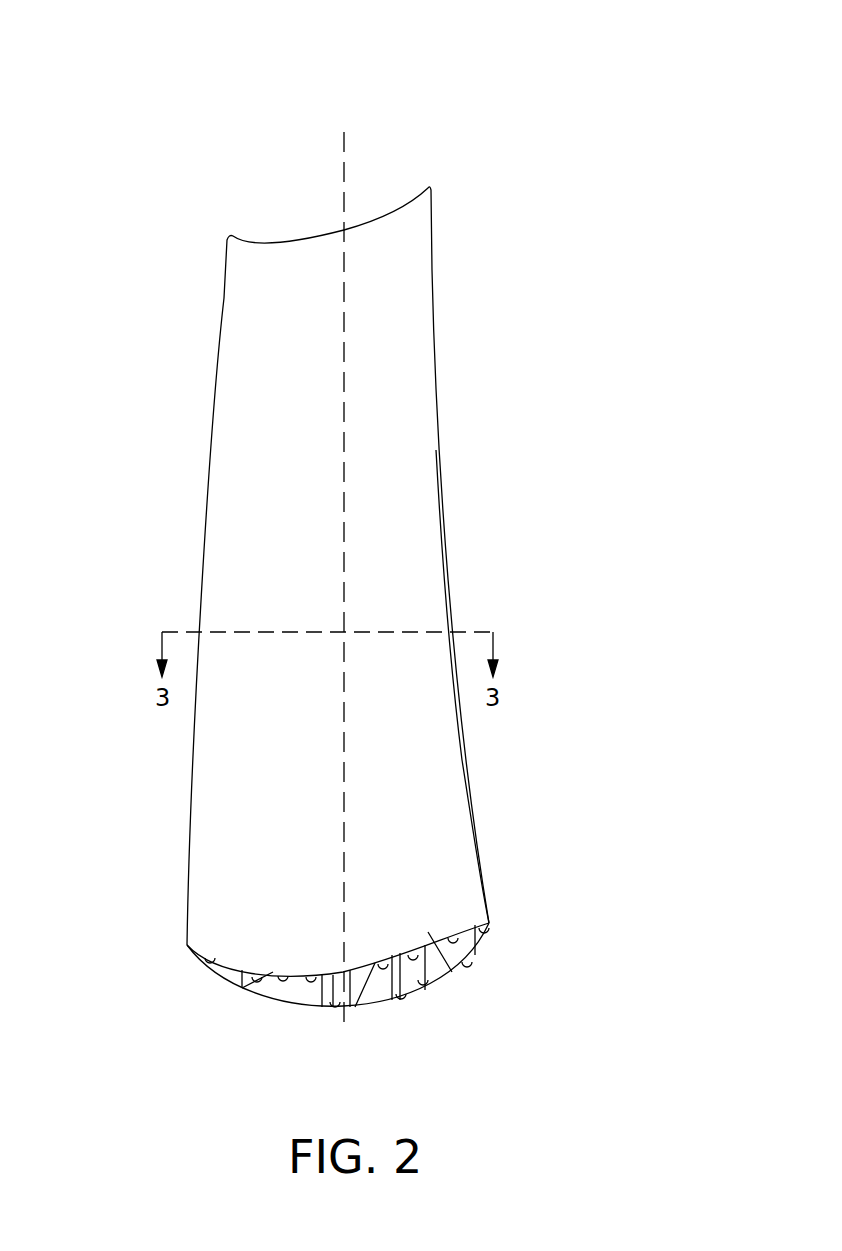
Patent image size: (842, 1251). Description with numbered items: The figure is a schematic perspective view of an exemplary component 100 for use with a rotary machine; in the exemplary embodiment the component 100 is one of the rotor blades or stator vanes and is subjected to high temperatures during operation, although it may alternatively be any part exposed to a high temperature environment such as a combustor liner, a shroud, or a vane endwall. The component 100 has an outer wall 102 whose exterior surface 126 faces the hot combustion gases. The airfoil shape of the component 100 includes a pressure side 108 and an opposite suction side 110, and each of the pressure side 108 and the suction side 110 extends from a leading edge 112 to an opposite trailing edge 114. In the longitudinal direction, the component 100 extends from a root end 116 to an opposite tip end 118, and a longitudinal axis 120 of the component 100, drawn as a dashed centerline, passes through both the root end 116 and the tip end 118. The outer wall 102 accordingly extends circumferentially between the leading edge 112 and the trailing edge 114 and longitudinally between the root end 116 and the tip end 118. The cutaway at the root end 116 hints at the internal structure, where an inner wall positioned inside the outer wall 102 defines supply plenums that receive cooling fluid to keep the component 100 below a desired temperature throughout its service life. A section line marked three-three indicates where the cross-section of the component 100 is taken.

The component 100 is at (403, 88).
The outer wall 102 is at (427, 413).
The pressure side 108 is at (422, 510).
The suction side 110 is at (433, 315).
The leading edge 112 is at (465, 757).
The trailing edge 114 is at (188, 827).
The root end 116 is at (515, 935).
The tip end 118 is at (382, 192).
The longitudinal axis 120 is at (344, 172).
The exterior surface 126 is at (427, 903).